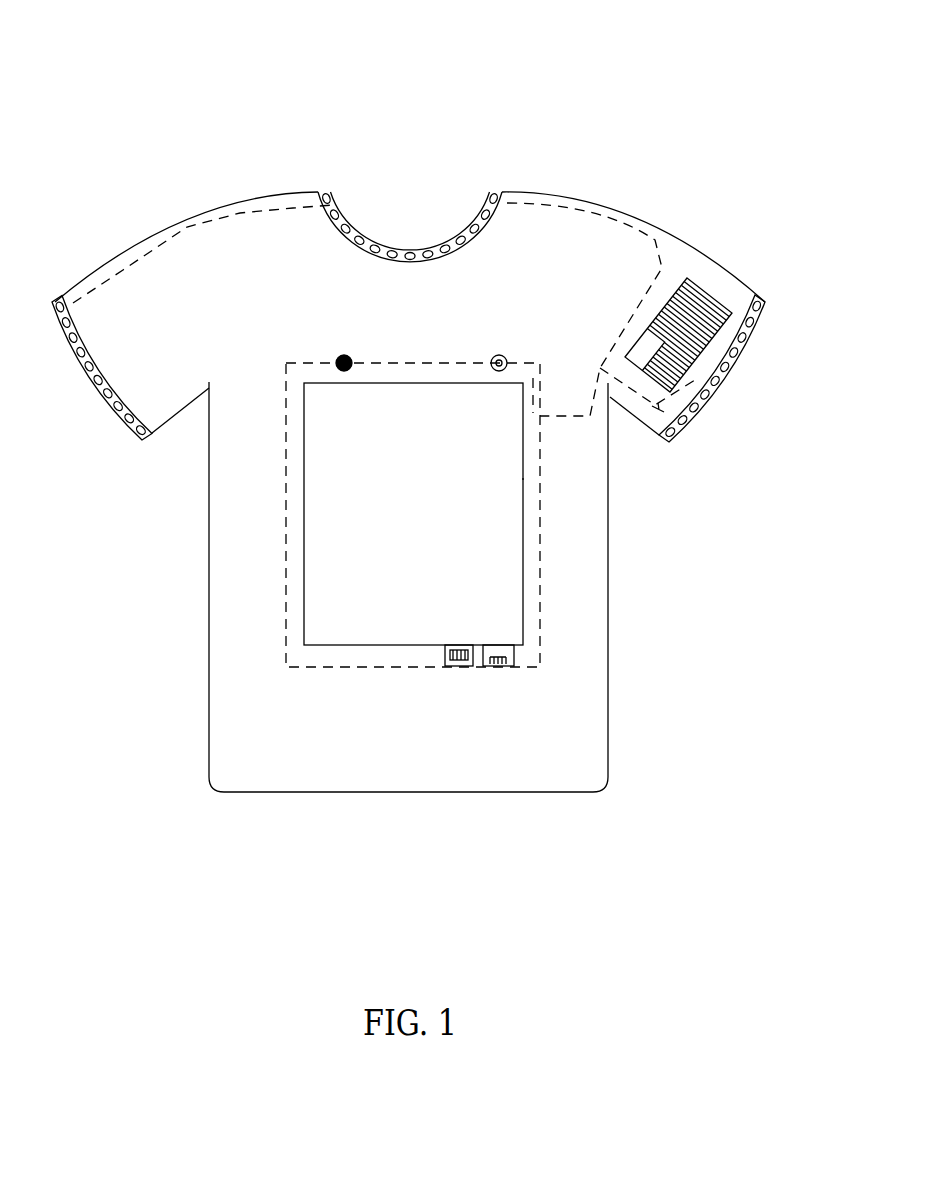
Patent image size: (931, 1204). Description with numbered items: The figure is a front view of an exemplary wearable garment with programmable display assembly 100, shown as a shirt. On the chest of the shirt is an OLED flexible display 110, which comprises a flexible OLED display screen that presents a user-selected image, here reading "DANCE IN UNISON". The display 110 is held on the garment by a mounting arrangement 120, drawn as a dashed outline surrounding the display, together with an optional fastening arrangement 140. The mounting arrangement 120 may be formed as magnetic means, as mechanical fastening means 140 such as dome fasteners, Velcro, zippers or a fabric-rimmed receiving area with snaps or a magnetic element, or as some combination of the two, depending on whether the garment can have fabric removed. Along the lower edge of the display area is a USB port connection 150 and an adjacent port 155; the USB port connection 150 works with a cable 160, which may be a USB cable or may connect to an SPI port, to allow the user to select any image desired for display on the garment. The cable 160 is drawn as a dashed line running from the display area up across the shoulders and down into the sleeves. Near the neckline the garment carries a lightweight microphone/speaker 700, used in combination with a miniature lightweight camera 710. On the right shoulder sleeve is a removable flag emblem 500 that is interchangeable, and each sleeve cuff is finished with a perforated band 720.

The garment with programmable display assembly 100 is at (116, 68).
The OLED flexible display 110 is at (318, 625).
The mounting arrangement 120 is at (285, 438).
The fastening arrangement 140 is at (523, 478).
The USB port connection 150 is at (502, 666).
The connector port 155 is at (454, 666).
The cable 160 is at (187, 226).
The removable flag emblem 500 is at (708, 347).
The microphone/speaker 700 is at (342, 354).
The miniature lightweight camera 710 is at (505, 354).
The sleeve cuff light strip 720 is at (110, 410).